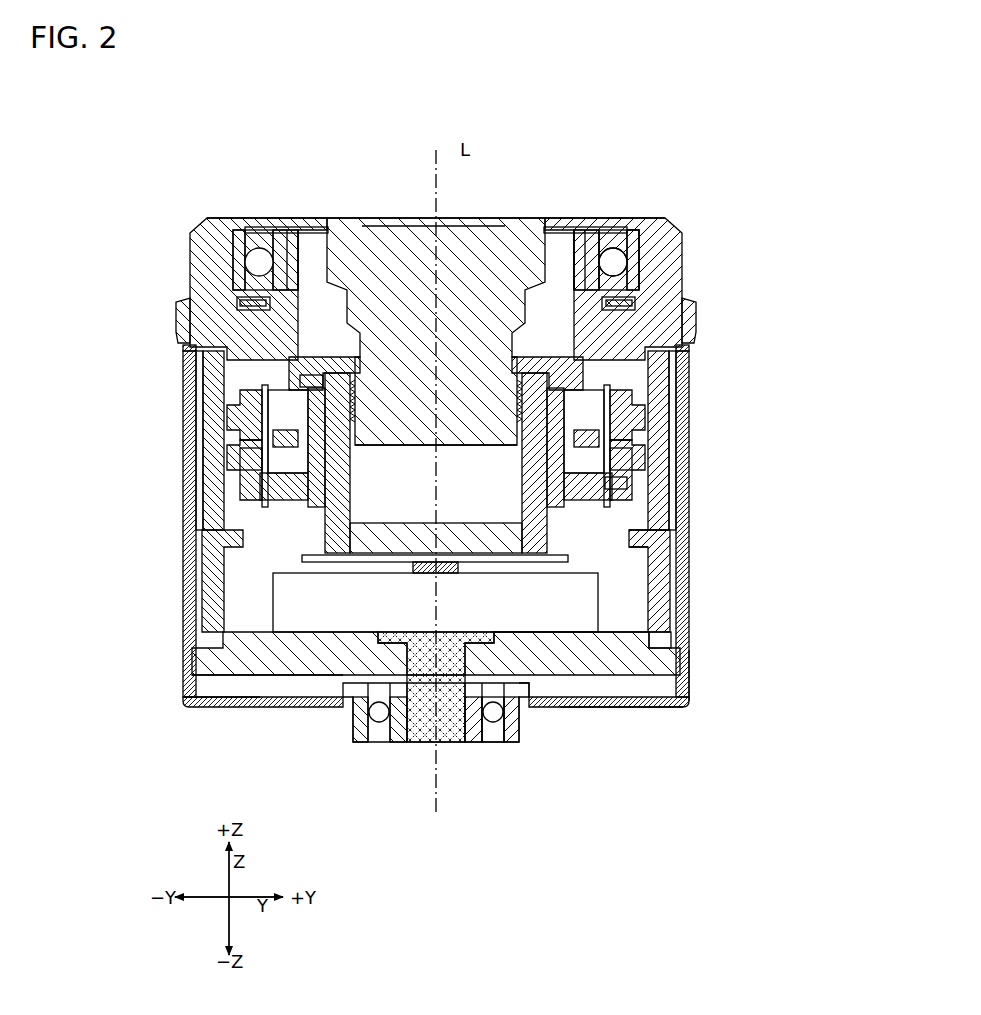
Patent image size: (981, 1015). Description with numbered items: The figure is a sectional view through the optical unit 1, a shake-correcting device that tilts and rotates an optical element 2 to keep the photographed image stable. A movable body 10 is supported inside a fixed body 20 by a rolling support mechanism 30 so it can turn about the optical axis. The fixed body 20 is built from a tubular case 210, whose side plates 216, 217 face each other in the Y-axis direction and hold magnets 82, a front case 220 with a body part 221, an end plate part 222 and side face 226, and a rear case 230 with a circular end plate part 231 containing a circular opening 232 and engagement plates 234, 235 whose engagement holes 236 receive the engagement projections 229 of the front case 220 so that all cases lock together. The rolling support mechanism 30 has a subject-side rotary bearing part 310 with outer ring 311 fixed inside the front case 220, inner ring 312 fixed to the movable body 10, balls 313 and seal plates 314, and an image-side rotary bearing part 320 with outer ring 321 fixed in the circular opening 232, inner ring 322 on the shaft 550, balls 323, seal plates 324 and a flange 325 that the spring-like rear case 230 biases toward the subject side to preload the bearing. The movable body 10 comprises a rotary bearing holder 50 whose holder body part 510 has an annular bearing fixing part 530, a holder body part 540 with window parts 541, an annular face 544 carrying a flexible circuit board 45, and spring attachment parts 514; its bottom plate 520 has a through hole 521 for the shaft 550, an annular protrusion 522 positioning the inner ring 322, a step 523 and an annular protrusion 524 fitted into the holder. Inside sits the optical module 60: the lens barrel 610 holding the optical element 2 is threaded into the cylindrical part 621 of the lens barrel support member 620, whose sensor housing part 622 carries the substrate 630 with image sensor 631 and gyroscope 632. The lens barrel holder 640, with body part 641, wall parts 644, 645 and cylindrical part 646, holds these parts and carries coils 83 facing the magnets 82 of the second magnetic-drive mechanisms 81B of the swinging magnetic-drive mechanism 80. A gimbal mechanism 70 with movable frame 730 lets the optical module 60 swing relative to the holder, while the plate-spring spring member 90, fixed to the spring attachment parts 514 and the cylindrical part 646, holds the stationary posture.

The optical unit 1 is at (140, 151).
The optical element 2 is at (398, 217).
The movable body 10 is at (436, 289).
The fixed body 20 is at (439, 559).
The rolling support mechanism 30 is at (461, 471).
The flexible circuit board 45 is at (643, 283).
The rotary bearing holder 50 is at (219, 684).
The optical module 60 is at (415, 225).
The gimbal mechanism 70 is at (519, 462).
The swinging magnetic-drive mechanism 80 is at (438, 440).
The second magnetic-drive mechanism 81B is at (737, 385).
The magnet 82 is at (212, 421).
The coil 83 is at (240, 397).
The spring member 90 is at (300, 386).
The tubular case 210 is at (457, 524).
The side plate 216 is at (189, 627).
The side plate 217 is at (684, 620).
The front case 220 is at (416, 282).
The body part 221 is at (434, 282).
The end plate part 222 is at (262, 219).
The side face 226 is at (189, 267).
The engagement projection 229 is at (178, 324).
The rear case 230 is at (457, 708).
The end plate part 231 is at (640, 708).
The circular opening 232 is at (360, 708).
The engagement plate 234 is at (183, 678).
The engagement plate 235 is at (689, 664).
The engagement hole 236 is at (185, 348).
The subject-side rotary bearing part 310 is at (461, 201).
The outer ring 311 is at (628, 233).
The inner ring 312 is at (592, 233).
The ball 313 is at (608, 235).
The seal plate 314 is at (611, 240).
The image-side rotary bearing part 320 is at (476, 756).
The outer ring 321 is at (518, 727).
The inner ring 322 is at (474, 734).
The ball 323 is at (492, 724).
The seal plate 324 is at (486, 744).
The flange 325 is at (529, 687).
The holder body part 510 is at (506, 502).
The spring attachment part 514 is at (293, 367).
The bottom plate 520 is at (501, 624).
The through hole 521 is at (470, 633).
The annular protrusion 522 is at (387, 676).
The step 523 is at (660, 638).
The annular protrusion 524 is at (624, 633).
The bearing fixing part 530 is at (270, 227).
The holder body part 540 is at (660, 565).
The window part 541 is at (654, 541).
The annular face 544 is at (628, 303).
The shaft 550 is at (420, 735).
The lens barrel 610 is at (460, 442).
The lens barrel support member 620 is at (435, 506).
The cylindrical part 621 is at (426, 481).
The sensor housing part 622 is at (393, 553).
The substrate 630 is at (435, 596).
The image sensor 631 is at (395, 563).
The gyroscope 632 is at (442, 566).
The lens barrel holder 640 is at (457, 464).
The lens barrel holder body part 641 is at (547, 490).
The wall part 644 is at (621, 483).
The wall part 645 is at (247, 491).
The cylindrical part 646 is at (547, 450).
The movable frame 730 is at (631, 460).